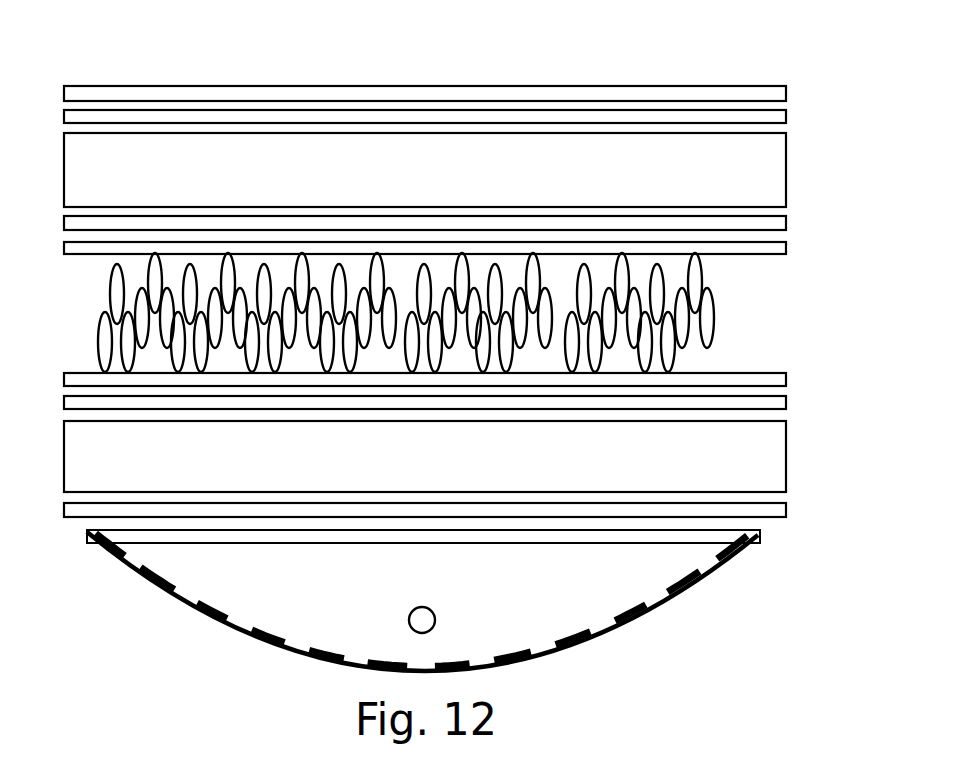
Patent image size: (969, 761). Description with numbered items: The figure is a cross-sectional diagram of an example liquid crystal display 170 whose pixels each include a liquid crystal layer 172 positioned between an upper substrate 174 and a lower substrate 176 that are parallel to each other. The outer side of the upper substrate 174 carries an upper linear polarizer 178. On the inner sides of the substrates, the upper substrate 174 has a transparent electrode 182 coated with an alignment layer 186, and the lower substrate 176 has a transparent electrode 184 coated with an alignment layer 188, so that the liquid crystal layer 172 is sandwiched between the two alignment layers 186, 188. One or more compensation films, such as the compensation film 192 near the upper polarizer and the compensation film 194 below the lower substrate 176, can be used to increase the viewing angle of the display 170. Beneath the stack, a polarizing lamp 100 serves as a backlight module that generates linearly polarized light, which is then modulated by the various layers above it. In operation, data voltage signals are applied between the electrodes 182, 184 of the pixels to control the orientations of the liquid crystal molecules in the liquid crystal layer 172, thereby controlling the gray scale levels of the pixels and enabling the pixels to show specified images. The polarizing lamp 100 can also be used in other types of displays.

The liquid crystal display 170 is at (746, 40).
The upper linear polarizer 178 is at (786, 93).
The compensation film 192 is at (786, 118).
The upper substrate 174 is at (786, 167).
The transparent electrode 182 is at (786, 224).
The alignment layer 186 is at (786, 248).
The liquid crystal layer 172 is at (714, 320).
The alignment layer 188 is at (786, 379).
The transparent electrode 184 is at (786, 402).
The lower substrate 176 is at (786, 452).
The compensation film 194 is at (786, 510).
The polarizing lamp 100 is at (712, 588).